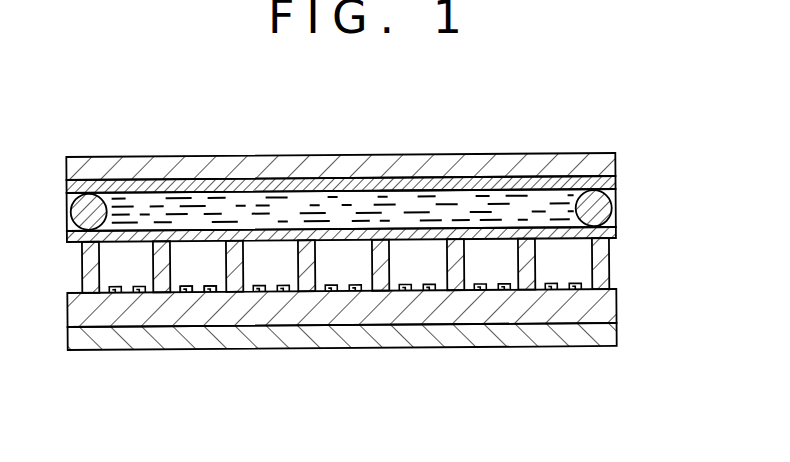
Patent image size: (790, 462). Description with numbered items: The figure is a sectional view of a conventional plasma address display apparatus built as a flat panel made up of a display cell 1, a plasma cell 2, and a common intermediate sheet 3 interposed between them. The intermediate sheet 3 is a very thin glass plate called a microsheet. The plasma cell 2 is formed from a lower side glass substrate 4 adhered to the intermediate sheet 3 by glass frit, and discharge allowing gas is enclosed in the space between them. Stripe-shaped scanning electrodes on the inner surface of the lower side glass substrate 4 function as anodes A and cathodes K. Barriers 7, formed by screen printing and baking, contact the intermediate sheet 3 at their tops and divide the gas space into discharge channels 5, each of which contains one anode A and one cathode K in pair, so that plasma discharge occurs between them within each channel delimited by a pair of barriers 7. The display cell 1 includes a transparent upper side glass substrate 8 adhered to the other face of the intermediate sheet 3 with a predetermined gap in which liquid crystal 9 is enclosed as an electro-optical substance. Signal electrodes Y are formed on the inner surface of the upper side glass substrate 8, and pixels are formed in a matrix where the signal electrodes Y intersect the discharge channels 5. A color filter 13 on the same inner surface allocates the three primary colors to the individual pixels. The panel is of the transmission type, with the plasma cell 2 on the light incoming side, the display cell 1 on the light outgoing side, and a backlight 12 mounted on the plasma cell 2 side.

The display cell 1 is at (364, 167).
The plasma cell 2 is at (365, 316).
The intermediate sheet 3 is at (610, 233).
The lower side glass substrate 4 is at (587, 305).
The discharge channel 5 is at (560, 254).
The barrier 7 is at (393, 266).
The upper side glass substrate 8 is at (560, 160).
The liquid crystal 9 is at (296, 192).
The backlight 12 is at (457, 348).
The color filter 13 is at (143, 185).
The signal electrode Y is at (435, 189).
The anode A is at (191, 292).
The cathode K is at (204, 292).